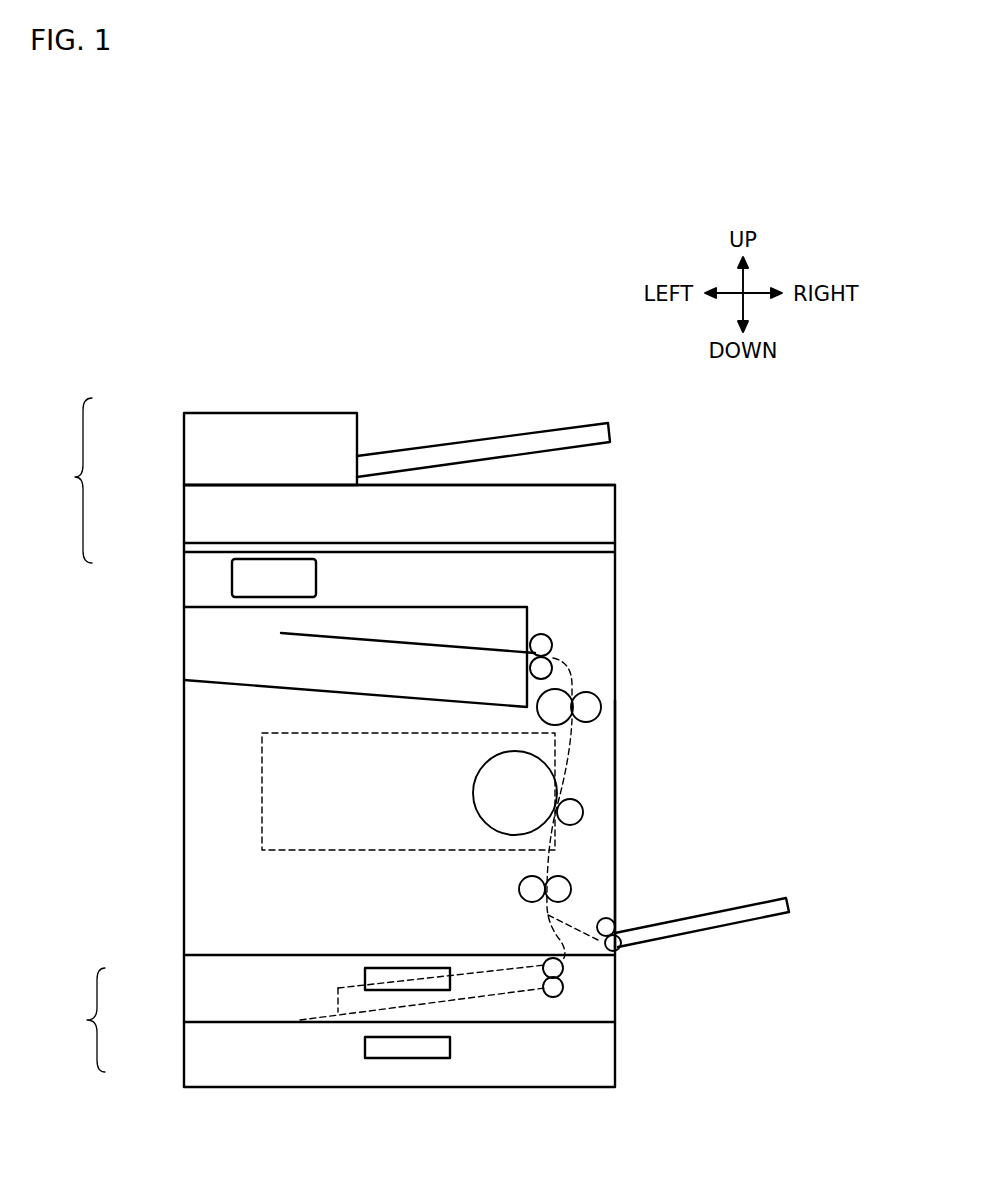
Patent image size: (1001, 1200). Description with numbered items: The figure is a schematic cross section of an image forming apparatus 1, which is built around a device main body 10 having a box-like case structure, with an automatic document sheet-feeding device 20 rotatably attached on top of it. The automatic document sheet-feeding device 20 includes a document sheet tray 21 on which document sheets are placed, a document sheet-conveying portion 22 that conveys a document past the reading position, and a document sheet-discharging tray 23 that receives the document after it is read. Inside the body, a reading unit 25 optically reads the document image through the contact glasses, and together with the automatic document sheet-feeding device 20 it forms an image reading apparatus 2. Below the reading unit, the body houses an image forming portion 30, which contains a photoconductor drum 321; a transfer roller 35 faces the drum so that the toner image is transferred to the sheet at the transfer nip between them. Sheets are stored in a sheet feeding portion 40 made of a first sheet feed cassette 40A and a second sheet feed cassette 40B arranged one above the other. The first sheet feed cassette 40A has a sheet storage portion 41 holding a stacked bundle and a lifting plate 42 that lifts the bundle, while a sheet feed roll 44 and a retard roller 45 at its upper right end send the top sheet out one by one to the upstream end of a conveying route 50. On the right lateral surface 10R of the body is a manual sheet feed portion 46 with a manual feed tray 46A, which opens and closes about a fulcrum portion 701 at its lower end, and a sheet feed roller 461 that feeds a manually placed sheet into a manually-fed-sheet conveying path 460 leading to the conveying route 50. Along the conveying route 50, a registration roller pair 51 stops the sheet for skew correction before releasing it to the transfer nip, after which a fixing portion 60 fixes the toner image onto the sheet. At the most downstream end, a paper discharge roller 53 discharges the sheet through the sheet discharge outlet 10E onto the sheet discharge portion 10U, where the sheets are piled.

The image forming apparatus 1 is at (603, 386).
The image reading apparatus 2 is at (74, 480).
The device main body 10 is at (616, 630).
The sheet discharge outlet 10E is at (533, 654).
The sheet discharge portion 10U is at (232, 680).
The right lateral surface 10R is at (616, 822).
The automatic document sheet-feeding device 20 is at (166, 432).
The document sheet tray 21 is at (493, 440).
The document sheet-conveying portion 22 is at (294, 428).
The document sheet-discharging tray 23 is at (585, 485).
The reading unit 25 is at (232, 580).
The image forming portion 30 is at (262, 780).
The photoconductor drum 321 is at (475, 797).
The transfer roller 35 is at (572, 812).
The sheet feeding portion 40 is at (336, 1013).
The first sheet feed cassette 40A is at (192, 985).
The second sheet feed cassette 40B is at (192, 1052).
The sheet storage portion 41 is at (282, 994).
The lifting plate 42 is at (507, 996).
The sheet feed roll 44 is at (566, 964).
The retard roller 45 is at (566, 986).
The manual sheet feed portion 46 is at (702, 898).
The manual feed tray 46A is at (752, 914).
The manually-fed-sheet conveying path 460 is at (562, 922).
The sheet feed roller 461 is at (615, 922).
The fulcrum portion 701 is at (619, 947).
The conveying route 50 is at (560, 756).
The registration roller pair 51 is at (520, 889).
The paper discharge roller 53 is at (548, 638).
The fixing portion 60 is at (590, 706).